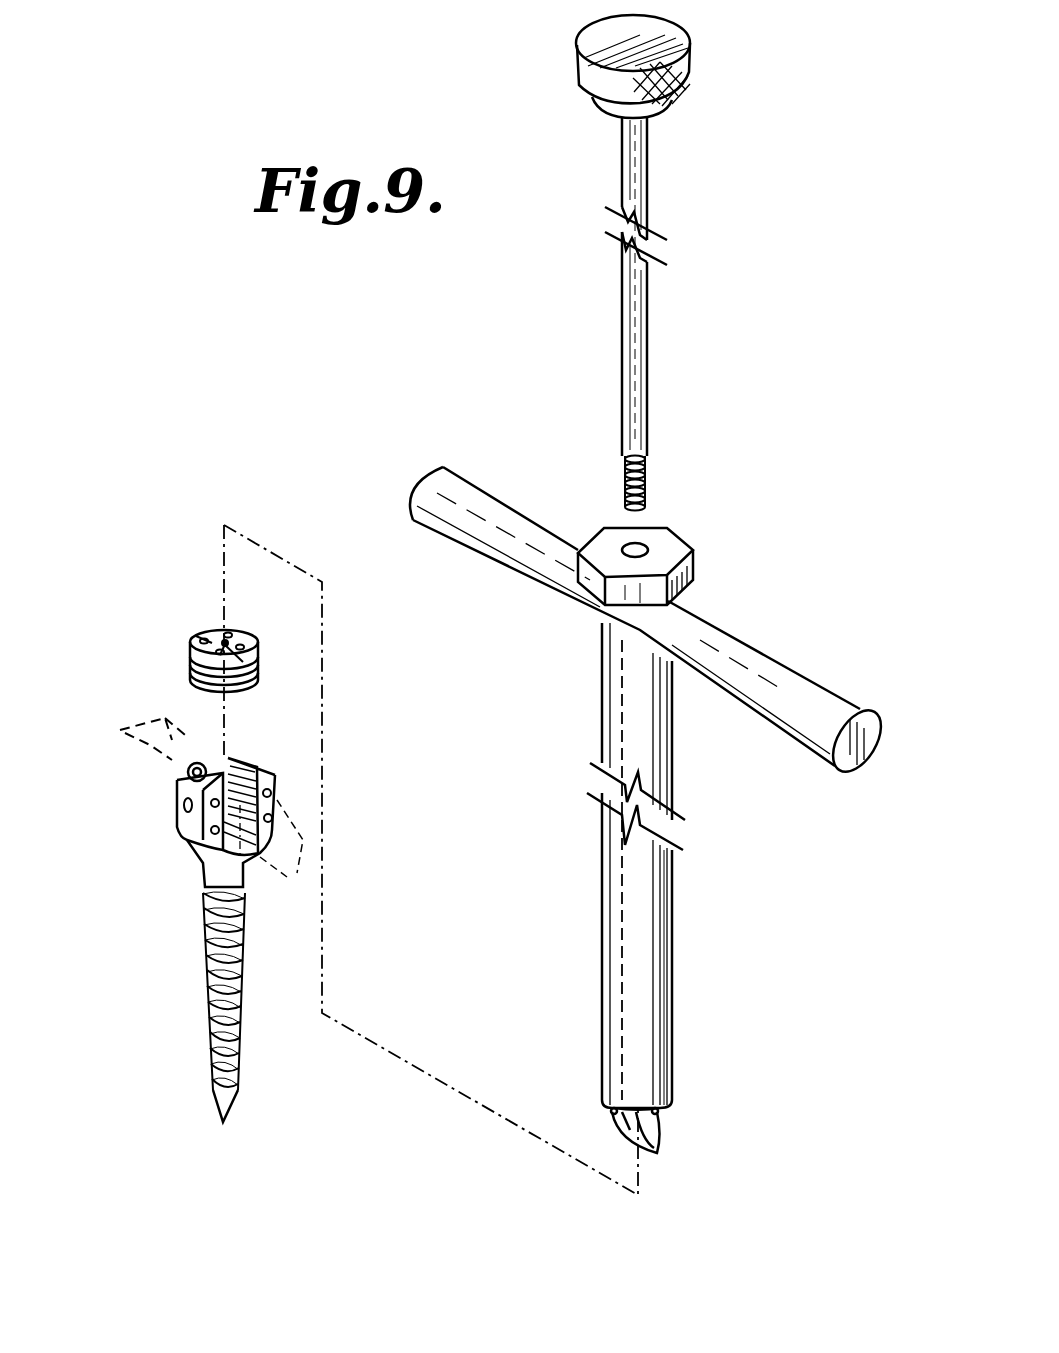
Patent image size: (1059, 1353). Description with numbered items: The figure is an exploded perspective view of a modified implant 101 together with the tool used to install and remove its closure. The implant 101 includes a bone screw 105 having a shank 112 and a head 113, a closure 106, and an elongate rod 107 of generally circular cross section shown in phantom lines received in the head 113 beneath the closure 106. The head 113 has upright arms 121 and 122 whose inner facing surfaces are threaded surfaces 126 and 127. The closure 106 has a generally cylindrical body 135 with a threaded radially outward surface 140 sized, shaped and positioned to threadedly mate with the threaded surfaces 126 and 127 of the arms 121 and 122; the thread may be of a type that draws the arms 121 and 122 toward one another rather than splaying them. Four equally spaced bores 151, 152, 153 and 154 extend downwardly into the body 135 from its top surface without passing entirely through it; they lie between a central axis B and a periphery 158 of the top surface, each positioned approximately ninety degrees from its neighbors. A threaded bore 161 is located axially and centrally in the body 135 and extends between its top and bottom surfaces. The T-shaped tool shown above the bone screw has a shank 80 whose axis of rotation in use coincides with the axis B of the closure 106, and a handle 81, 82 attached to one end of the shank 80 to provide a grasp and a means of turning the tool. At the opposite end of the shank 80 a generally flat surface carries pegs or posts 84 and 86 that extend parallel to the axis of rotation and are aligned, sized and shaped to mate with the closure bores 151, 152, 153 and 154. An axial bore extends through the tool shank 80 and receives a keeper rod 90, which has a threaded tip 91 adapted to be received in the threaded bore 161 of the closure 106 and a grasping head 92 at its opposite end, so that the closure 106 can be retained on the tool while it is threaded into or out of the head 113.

The central axis B is at (224, 530).
The knob 92 is at (690, 70).
The inner shaft 90 is at (648, 395).
The threaded end 91 is at (646, 492).
The T-handle 82 is at (755, 638).
The shank 80 is at (673, 770).
The handle 81 is at (674, 935).
The post 84 is at (674, 1105).
The post 86 is at (652, 1143).
The closure 106 is at (191, 655).
The bore 151 is at (205, 636).
The body 135 is at (196, 636).
The bore 152 is at (230, 636).
The periphery 158 is at (244, 647).
The threaded radially outward surface 140 is at (256, 660).
The threaded bore 161 is at (205, 660).
The bore 153 is at (220, 655).
The bore 154 is at (243, 662).
The implant 101 is at (224, 920).
The head 113 is at (186, 840).
The upright arm 121 is at (185, 805).
The upright arm 122 is at (277, 795).
The threaded surface 126 is at (190, 770).
The threaded surface 127 is at (240, 770).
The rod 107 is at (183, 797).
The bone screw 105 is at (240, 1025).
The shank 112 is at (233, 1068).